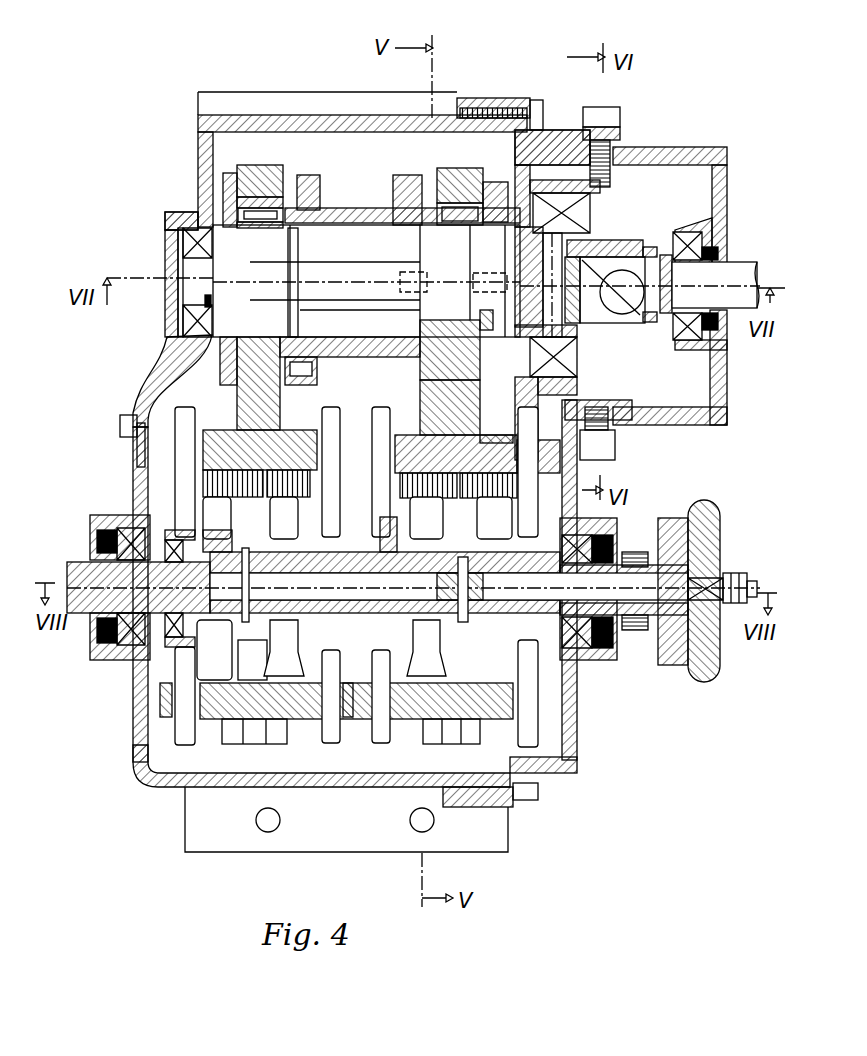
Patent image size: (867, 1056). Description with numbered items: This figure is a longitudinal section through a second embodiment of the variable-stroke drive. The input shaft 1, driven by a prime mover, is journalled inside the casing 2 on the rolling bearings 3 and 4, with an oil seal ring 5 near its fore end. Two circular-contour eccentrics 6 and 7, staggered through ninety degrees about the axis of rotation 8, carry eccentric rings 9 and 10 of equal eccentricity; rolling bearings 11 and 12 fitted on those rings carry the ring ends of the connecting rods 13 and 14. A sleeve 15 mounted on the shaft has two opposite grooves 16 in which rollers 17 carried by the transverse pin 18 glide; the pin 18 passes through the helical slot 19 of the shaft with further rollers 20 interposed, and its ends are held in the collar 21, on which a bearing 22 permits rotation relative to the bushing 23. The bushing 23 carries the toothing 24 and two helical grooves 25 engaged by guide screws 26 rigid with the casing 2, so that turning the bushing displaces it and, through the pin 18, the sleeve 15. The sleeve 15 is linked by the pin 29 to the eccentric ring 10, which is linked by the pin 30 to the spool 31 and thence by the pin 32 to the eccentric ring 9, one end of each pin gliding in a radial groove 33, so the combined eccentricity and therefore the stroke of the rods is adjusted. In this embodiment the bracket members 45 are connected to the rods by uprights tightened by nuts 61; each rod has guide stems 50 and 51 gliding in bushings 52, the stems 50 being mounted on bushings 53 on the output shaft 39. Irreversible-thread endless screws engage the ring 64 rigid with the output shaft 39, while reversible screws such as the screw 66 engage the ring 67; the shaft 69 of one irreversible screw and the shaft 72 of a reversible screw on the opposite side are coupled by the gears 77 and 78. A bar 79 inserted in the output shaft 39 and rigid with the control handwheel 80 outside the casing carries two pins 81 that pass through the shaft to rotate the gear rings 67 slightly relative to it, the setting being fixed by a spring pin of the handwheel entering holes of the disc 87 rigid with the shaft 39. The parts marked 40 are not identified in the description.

The input shaft 1 is at (740, 277).
The casing 2 is at (716, 386).
The rolling bearing 3 is at (723, 237).
The rolling bearing 4 is at (195, 237).
The oil seal ring 5 is at (722, 332).
The eccentric 6 is at (267, 240).
The eccentric 7 is at (440, 250).
The axis of rotation 8 is at (178, 252).
The eccentric ring 9 is at (210, 332).
The eccentric ring 10 is at (440, 332).
The rolling bearing 11 is at (252, 203).
The rolling bearing 12 is at (465, 200).
The connecting rod 13 is at (252, 392).
The connecting rod 14 is at (453, 410).
The sleeve 15 is at (725, 213).
The grooves 16 is at (723, 172).
The rollers 17 is at (515, 197).
The transverse pin 18 is at (552, 300).
The helical slot 19 is at (608, 295).
The rollers 20 is at (523, 270).
The collar 21 is at (690, 145).
The bearing 22 is at (633, 248).
The bushing 23 is at (515, 100).
The toothing 24 is at (557, 180).
The helical grooves 25 is at (673, 425).
The guide screws 26 is at (615, 155).
The pin 29 is at (473, 290).
The pin 30 is at (387, 230).
The spool 31 is at (345, 213).
The pin 32 is at (312, 367).
The radial grooves 33 is at (300, 340).
The output shaft 39 is at (100, 605).
The bearing 40 is at (587, 540).
The bracket members 45 is at (215, 712).
The guide stems 50 is at (187, 422).
The guide stems 51 is at (382, 730).
The bushings 52 is at (213, 707).
The bushings 53 is at (185, 660).
The nuts 61 is at (233, 737).
The ring 64 is at (288, 650).
The reversible thread endless screw 66 is at (140, 773).
The ring 67 is at (203, 550).
The shaft 69 is at (280, 520).
The shaft 72 is at (215, 510).
The toothed wheel 77 is at (297, 458).
The toothed wheel 78 is at (215, 482).
The bar 79 is at (623, 630).
The control handwheel 80 is at (707, 647).
The pins 81 is at (270, 585).
The disc 87 is at (667, 643).